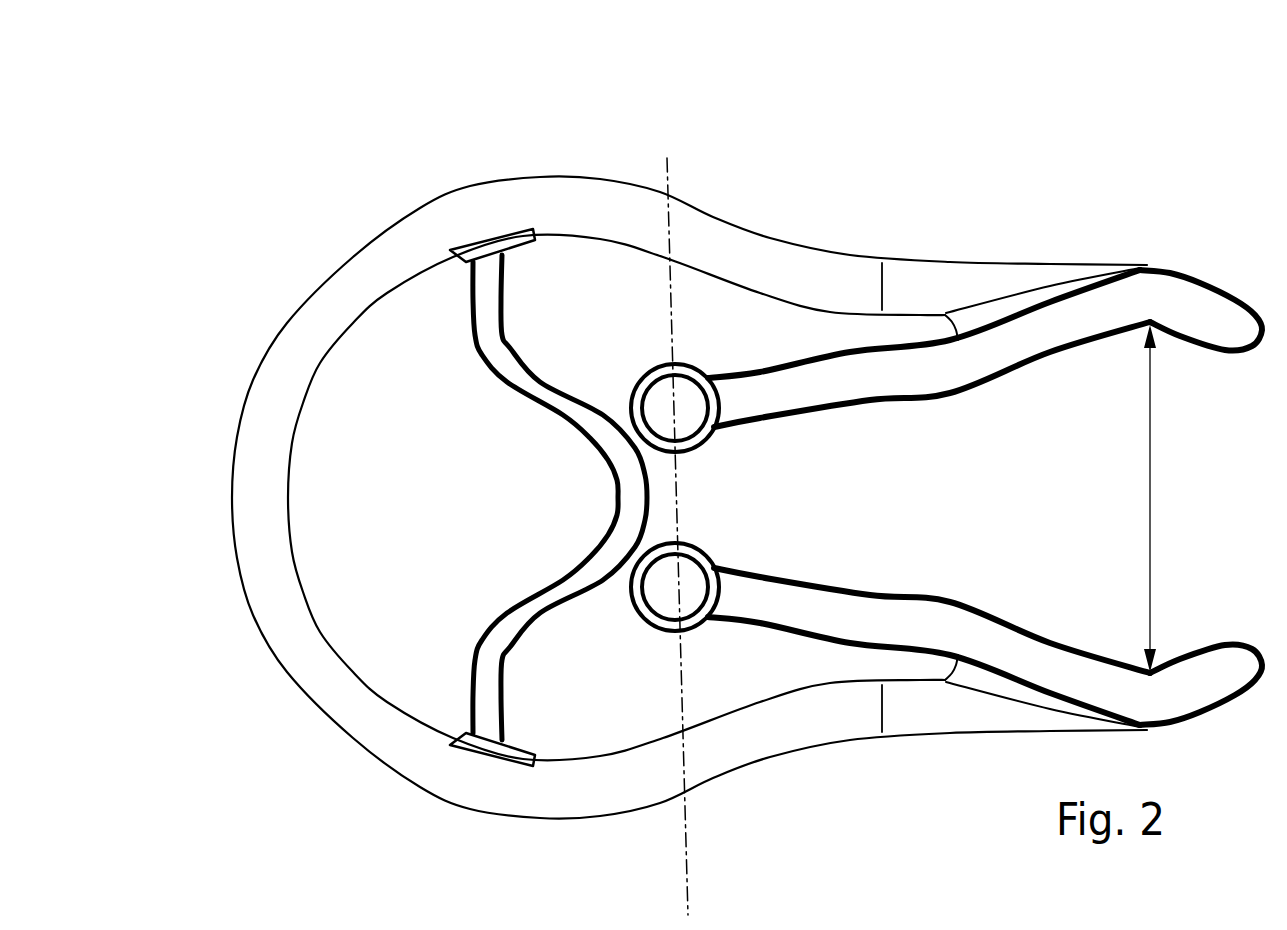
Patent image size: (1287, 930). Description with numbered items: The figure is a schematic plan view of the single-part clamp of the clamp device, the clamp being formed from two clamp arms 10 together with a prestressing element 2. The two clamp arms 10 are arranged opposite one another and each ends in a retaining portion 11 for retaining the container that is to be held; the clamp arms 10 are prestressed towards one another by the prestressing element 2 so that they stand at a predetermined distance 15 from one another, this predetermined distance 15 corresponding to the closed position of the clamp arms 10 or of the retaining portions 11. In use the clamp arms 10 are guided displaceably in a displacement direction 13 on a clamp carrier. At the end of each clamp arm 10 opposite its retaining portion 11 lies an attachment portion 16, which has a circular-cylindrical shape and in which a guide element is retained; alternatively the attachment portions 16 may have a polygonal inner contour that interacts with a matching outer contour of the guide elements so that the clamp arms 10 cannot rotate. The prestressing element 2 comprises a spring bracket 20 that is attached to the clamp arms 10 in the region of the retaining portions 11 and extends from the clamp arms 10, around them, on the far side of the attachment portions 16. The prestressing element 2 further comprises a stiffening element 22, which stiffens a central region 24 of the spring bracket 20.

The prestressing element 2 is at (437, 153).
The clamp arm 10 is at (848, 617).
The retaining portion 11 is at (1188, 355).
The displacement direction 13 is at (672, 177).
The predetermined distance 15 is at (1140, 510).
The attachment portion 16 is at (692, 573).
The spring bracket 20 is at (561, 200).
The stiffening element 22 is at (505, 352).
The central region 24 is at (258, 444).